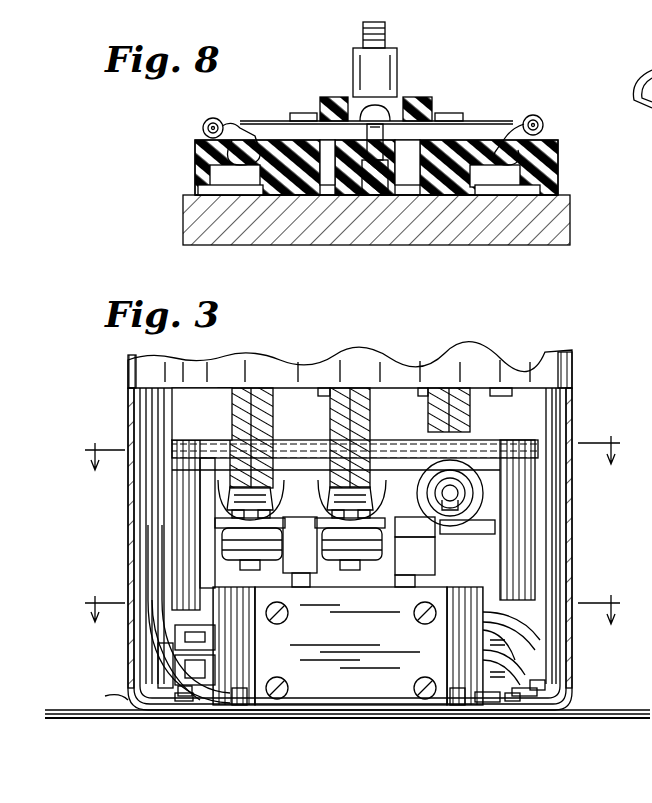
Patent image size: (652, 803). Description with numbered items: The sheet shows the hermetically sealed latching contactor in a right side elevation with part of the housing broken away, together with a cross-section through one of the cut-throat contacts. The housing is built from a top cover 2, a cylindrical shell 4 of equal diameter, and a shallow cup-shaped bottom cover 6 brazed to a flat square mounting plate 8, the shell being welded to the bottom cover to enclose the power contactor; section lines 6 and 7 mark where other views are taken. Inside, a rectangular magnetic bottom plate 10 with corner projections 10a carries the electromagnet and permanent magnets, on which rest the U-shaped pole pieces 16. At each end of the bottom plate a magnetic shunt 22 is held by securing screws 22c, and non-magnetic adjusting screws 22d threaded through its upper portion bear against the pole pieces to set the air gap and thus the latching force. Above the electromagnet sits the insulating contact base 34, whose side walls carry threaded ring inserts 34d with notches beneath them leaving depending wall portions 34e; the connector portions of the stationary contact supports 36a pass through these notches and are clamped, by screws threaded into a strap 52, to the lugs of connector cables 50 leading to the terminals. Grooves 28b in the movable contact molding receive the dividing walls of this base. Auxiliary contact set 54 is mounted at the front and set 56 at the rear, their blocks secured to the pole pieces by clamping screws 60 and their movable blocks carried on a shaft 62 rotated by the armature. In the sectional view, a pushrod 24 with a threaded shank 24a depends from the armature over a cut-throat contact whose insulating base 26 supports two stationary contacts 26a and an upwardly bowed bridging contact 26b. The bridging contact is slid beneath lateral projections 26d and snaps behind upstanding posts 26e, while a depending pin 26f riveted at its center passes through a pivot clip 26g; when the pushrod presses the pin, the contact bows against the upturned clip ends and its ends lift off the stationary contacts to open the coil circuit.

In FIG. 3, the top cover 2 is at (128, 376).
In FIG. 3, the shell 4 is at (128, 528).
In FIG. 3, the bottom cover 6 is at (352, 555).
In FIG. 3, the section line 7- 7 is at (352, 598).
In FIG. 3, the mounting plate 8 is at (65, 710).
In FIG. 8, the bottom plate 10 is at (183, 197).
In FIG. 3, the forward and rearward projections 10a is at (240, 705).
In FIG. 3, the pole pieces 16 is at (235, 630).
In FIG. 3, the magnetic shunts 22 is at (360, 638).
In FIG. 3, the securing screws 22c is at (414, 686).
In FIG. 3, the adjusting screws 22d is at (278, 628).
In FIG. 8, the pushrods 24 is at (397, 62).
In FIG. 8, the threaded shank 24a is at (385, 36).
In FIG. 8, the insulating base 26 is at (556, 153).
In FIG. 8, the stationary contacts 26a is at (242, 128).
In FIG. 8, the bridging contact 26b is at (490, 121).
In FIG. 8, the lateral projections 26d is at (322, 97).
In FIG. 8, the upstanding posts 26e is at (290, 116).
In FIG. 8, the depending pin 26f is at (383, 160).
In FIG. 8, the pivot clip 26g is at (362, 170).
In FIG. 3, the grooves 28b is at (317, 572).
In FIG. 3, the insulating contact base 34 is at (410, 458).
In FIG. 3, the internally threaded ring inserts 34d is at (470, 480).
In FIG. 3, the depending wall portions 34e is at (283, 560).
In FIG. 3, the stationary contact supports 36a is at (222, 548).
In FIG. 3, the connector cable 50 is at (330, 420).
In FIG. 3, the strap 52 is at (395, 520).
In FIG. 3, the set of auxiliary contacts 54 is at (165, 665).
In FIG. 3, the set of auxiliary contacts 56 is at (545, 684).
In FIG. 3, the clamping screws 60 is at (492, 702).
In FIG. 3, the shaft 62 is at (180, 701).